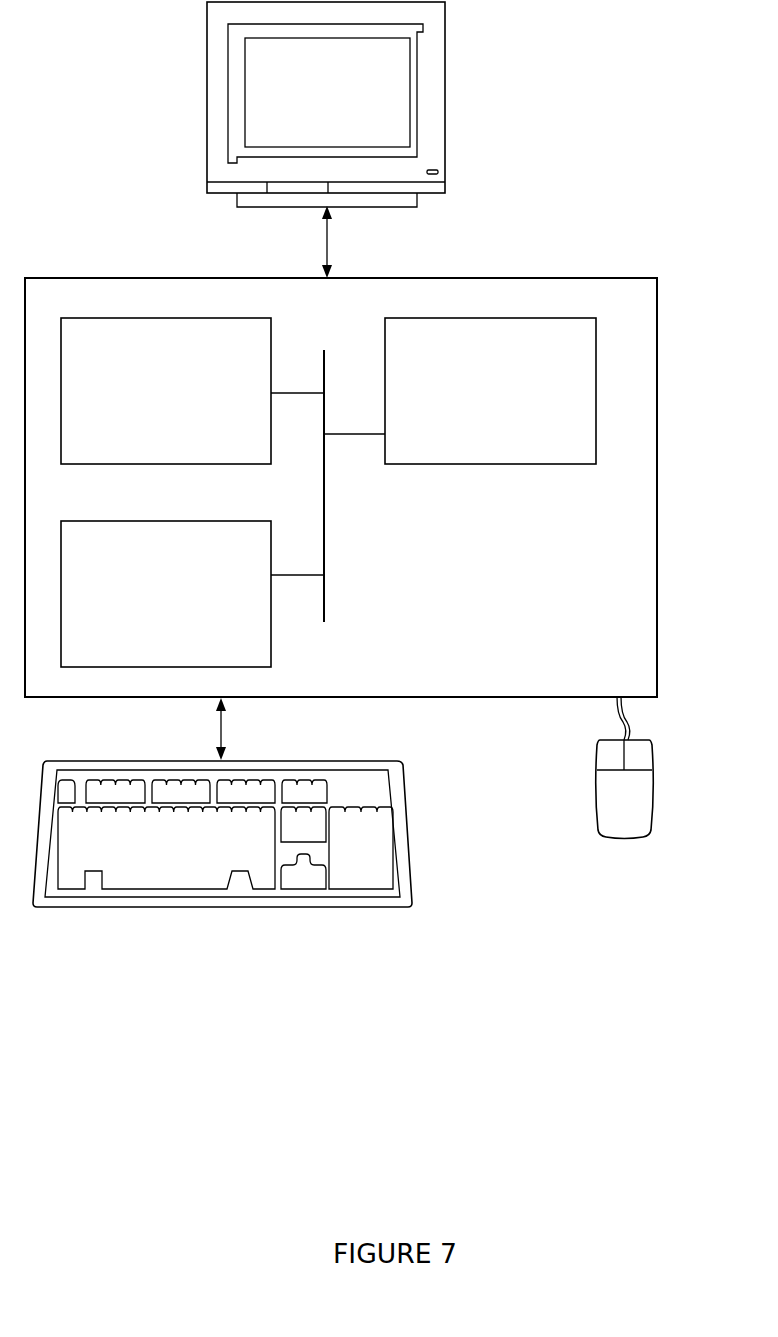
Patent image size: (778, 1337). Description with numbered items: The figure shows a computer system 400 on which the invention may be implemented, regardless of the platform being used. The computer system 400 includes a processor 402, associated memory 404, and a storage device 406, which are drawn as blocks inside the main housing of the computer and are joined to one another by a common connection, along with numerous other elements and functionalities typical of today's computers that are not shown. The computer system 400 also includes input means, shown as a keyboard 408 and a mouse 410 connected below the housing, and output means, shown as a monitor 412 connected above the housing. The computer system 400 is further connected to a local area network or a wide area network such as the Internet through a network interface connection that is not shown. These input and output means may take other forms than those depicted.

The computer system 400 is at (637, 158).
The processor 402 is at (460, 391).
The memory 404 is at (192, 391).
The storage device 406 is at (192, 594).
The keyboard 408 is at (222, 834).
The mouse 410 is at (625, 768).
The monitor 412 is at (326, 104).